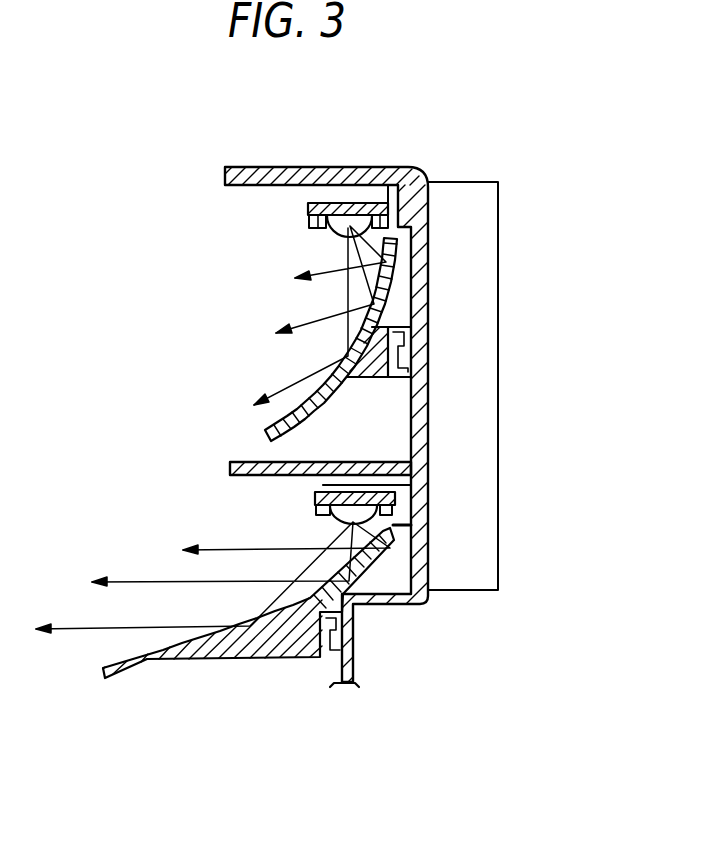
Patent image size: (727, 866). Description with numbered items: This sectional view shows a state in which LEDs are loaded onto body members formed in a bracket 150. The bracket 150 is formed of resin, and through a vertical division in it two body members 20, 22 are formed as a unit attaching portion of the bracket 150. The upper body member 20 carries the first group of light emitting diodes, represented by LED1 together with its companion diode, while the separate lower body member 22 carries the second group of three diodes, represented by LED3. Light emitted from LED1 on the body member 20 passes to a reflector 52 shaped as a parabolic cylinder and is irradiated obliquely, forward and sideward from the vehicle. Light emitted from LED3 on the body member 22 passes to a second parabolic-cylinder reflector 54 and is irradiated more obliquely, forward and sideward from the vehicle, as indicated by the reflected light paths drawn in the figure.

The bracket 150 is at (298, 166).
The body member 20 is at (308, 205).
The body member 22 is at (315, 493).
The reflector 52 is at (287, 421).
The reflector 54 is at (130, 657).
The LED LED1 is at (352, 228).
The LED LED3 is at (383, 538).